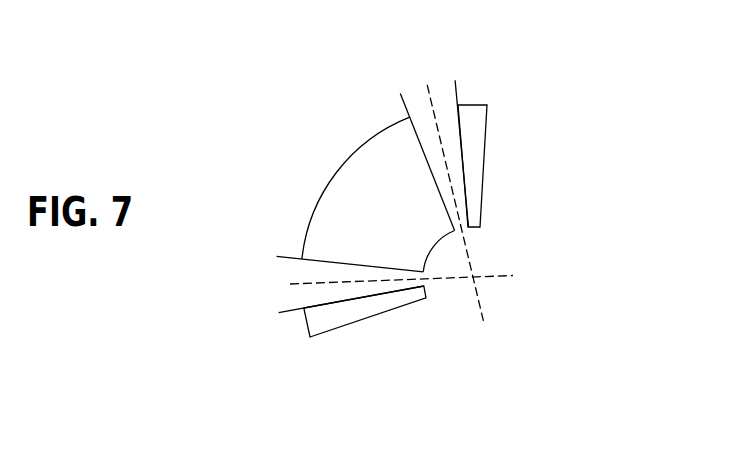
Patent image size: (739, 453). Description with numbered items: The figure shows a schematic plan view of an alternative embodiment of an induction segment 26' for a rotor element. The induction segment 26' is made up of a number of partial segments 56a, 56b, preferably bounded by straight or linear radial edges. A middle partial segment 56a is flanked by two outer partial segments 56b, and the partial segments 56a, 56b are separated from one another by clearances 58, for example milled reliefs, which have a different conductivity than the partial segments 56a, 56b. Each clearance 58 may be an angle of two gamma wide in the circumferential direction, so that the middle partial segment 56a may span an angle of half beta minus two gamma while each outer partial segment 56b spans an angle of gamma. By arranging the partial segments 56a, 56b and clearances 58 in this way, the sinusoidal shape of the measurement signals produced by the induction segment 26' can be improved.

The induction segment 26' is at (424, 207).
The partial segment 56a is at (375, 188).
The partial segment 56b is at (472, 172).
The clearance 58 is at (423, 117).